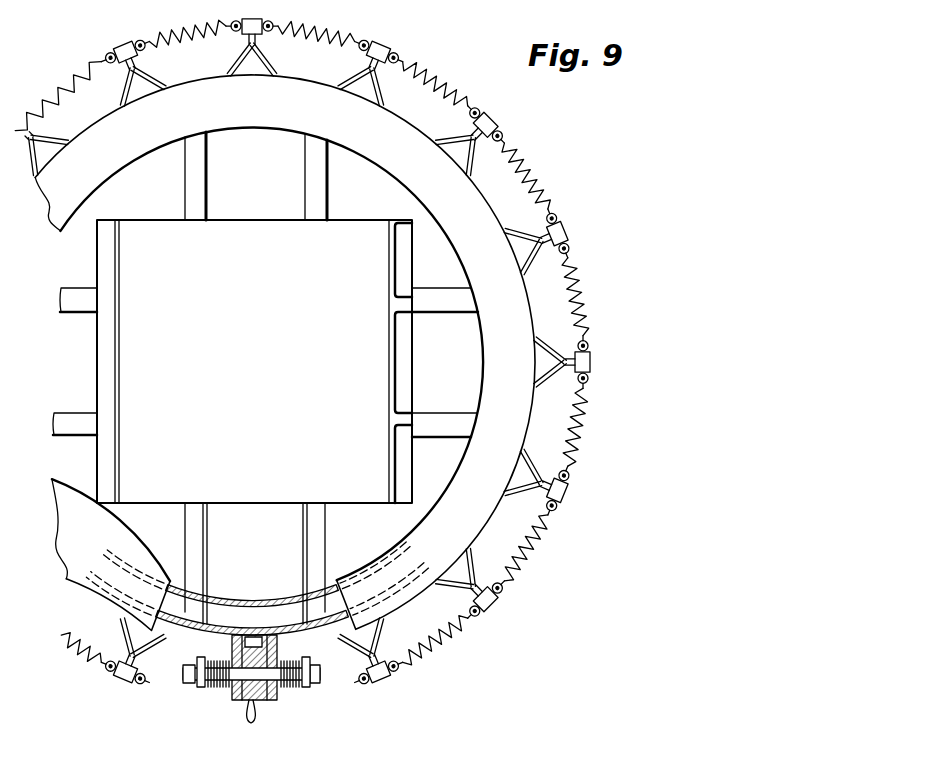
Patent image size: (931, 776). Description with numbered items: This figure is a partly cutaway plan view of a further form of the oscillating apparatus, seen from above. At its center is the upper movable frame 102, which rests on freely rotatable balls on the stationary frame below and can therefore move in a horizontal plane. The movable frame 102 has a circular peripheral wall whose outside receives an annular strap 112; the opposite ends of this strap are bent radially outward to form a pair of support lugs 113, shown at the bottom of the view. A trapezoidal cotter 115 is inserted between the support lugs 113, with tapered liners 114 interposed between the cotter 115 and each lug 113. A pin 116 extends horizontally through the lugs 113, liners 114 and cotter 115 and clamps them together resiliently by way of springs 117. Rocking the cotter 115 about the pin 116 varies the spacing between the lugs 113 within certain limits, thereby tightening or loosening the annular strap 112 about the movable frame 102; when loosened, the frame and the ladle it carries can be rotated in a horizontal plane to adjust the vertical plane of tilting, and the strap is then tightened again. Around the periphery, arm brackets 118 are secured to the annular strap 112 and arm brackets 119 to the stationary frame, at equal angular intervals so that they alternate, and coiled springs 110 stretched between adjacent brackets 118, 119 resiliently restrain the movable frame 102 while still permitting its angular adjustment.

The movable frame 102 is at (268, 130).
The coiled springs 110 is at (78, 76).
The annular strap 112 is at (259, 626).
The support lugs 113 is at (232, 694).
The tapered liners 114 is at (233, 626).
The trapezoidal cotter 115 is at (246, 708).
The pin 116 is at (183, 674).
The springs 117 is at (204, 690).
The arm brackets 118 is at (240, 61).
The arm brackets 119 is at (266, 62).